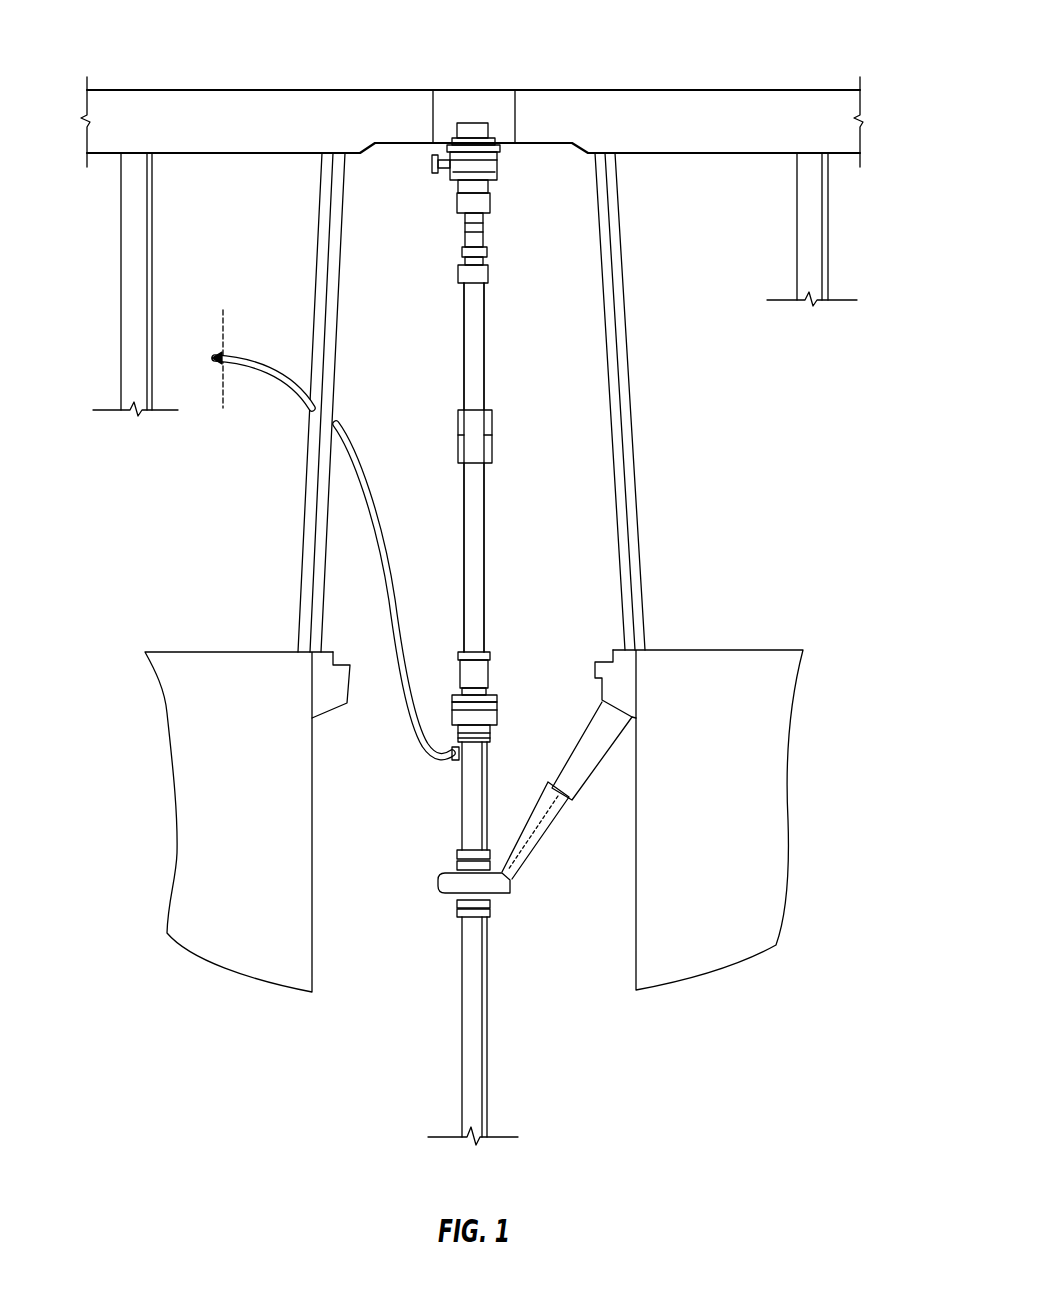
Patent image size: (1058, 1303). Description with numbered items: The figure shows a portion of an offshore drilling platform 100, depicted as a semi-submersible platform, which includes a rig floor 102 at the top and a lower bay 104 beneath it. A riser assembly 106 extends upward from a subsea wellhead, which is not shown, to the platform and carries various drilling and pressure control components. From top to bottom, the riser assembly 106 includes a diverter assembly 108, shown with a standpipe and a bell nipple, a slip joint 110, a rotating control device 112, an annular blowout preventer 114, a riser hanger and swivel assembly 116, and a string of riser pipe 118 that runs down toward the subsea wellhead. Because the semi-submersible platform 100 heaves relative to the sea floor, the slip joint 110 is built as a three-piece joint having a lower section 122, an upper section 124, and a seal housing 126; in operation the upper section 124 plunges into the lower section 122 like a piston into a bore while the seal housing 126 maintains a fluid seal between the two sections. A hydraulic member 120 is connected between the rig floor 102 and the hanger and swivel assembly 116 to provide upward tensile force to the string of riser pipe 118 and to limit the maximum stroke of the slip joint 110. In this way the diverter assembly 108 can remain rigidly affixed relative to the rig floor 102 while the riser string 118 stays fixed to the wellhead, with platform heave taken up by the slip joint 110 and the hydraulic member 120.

The offshore drilling platform 100 is at (687, 46).
The rig floor 102 is at (778, 90).
The lower bay 104 is at (722, 650).
The riser assembly 106 is at (528, 1060).
The diverter assembly 108 is at (435, 118).
The slip joint 110 is at (433, 265).
The rotating control device 112 is at (490, 672).
The annular blowout preventer 114 is at (497, 720).
The riser hanger and swivel assembly 116 is at (435, 1033).
The string of riser pipe 118 is at (484, 1110).
The hydraulic member 120 is at (607, 746).
The lower section 122 is at (490, 483).
The upper section 124 is at (490, 272).
The seal housing 126 is at (490, 435).